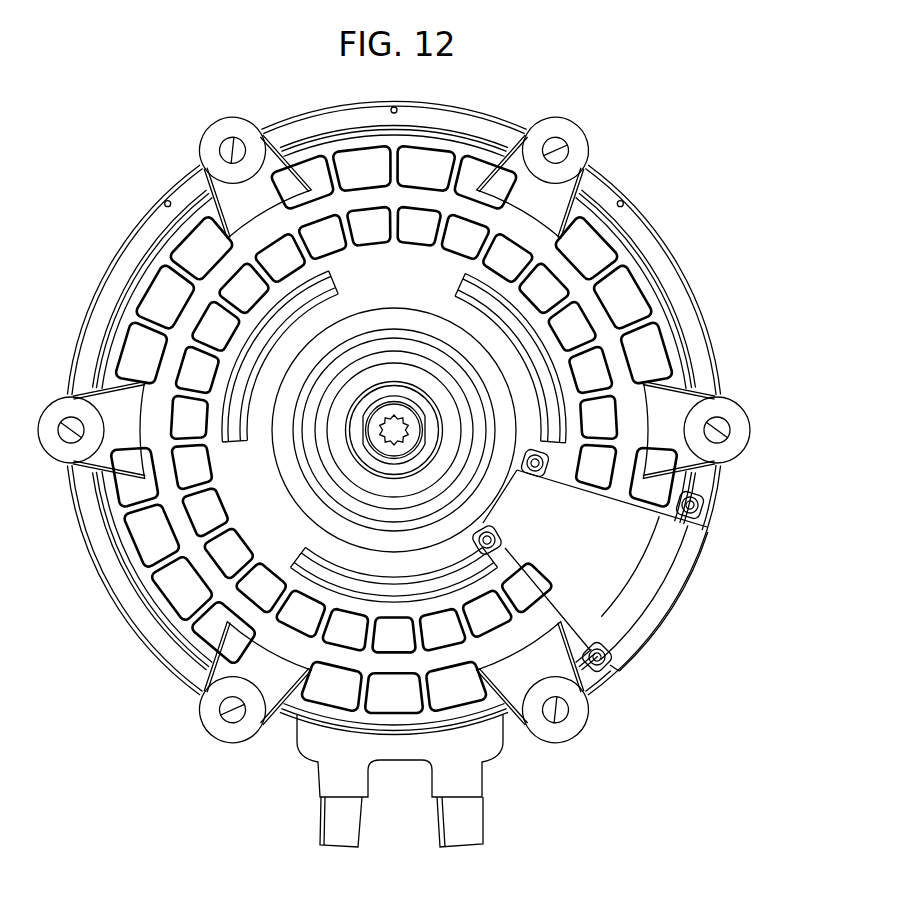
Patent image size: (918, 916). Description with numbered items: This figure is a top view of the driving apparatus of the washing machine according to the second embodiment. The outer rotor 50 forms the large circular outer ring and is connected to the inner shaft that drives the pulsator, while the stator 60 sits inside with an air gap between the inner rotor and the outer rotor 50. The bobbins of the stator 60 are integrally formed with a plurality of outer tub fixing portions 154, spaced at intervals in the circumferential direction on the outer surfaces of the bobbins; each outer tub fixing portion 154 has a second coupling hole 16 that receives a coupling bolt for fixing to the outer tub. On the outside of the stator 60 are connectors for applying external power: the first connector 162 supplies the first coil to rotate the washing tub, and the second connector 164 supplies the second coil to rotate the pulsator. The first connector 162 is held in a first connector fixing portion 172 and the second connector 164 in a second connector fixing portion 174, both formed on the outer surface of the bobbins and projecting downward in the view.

The outer rotor 50 is at (698, 343).
The stator 60 is at (547, 610).
The outer tub fixing portion 154 is at (550, 670).
The second coupling hole 16 is at (559, 722).
The first connector fixing portion 172 is at (323, 783).
The second connector fixing portion 174 is at (480, 783).
The first connector 162 is at (338, 843).
The second connector 164 is at (458, 843).